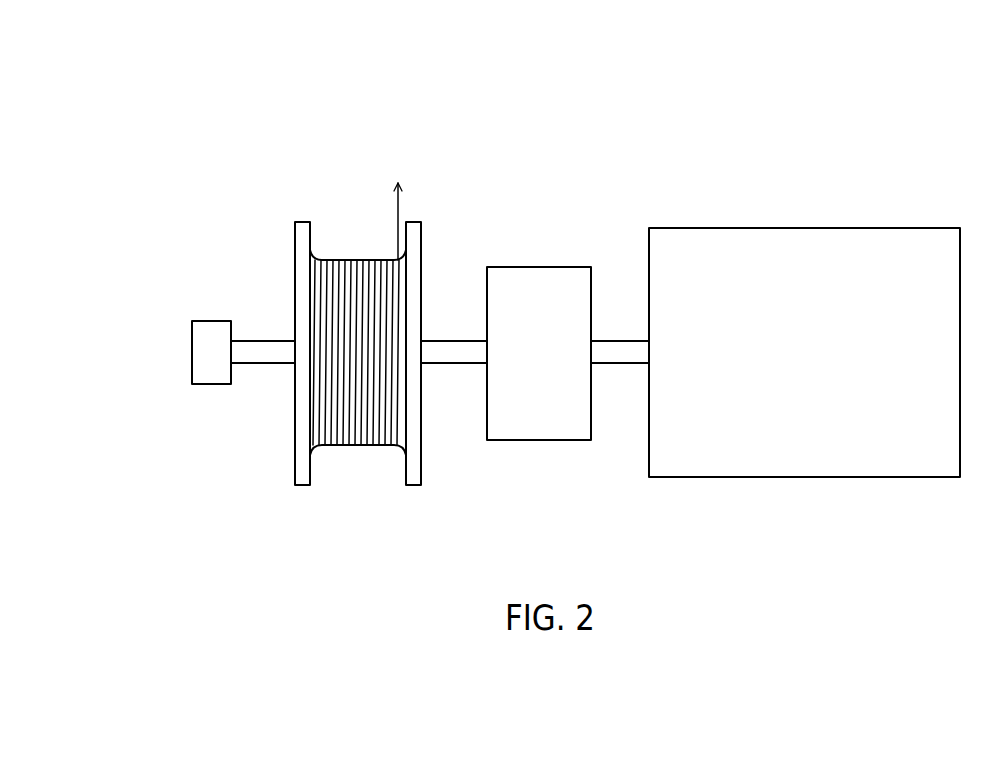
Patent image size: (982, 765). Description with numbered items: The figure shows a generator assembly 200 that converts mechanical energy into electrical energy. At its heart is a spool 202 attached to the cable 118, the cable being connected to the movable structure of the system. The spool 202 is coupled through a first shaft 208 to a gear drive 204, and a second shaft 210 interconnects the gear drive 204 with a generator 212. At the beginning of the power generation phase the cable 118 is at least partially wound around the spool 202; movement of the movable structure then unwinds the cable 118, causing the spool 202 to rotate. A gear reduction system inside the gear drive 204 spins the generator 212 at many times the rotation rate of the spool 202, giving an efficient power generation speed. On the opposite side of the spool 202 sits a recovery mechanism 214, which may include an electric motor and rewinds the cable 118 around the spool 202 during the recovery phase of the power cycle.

The generator assembly 200 is at (541, 98).
The spool 202 is at (352, 260).
The cable 118 is at (398, 203).
The gear drive 204 is at (532, 266).
The first shaft 208 is at (450, 364).
The second shaft 210 is at (622, 340).
The generator 212 is at (817, 228).
The recovery mechanism 214 is at (211, 320).